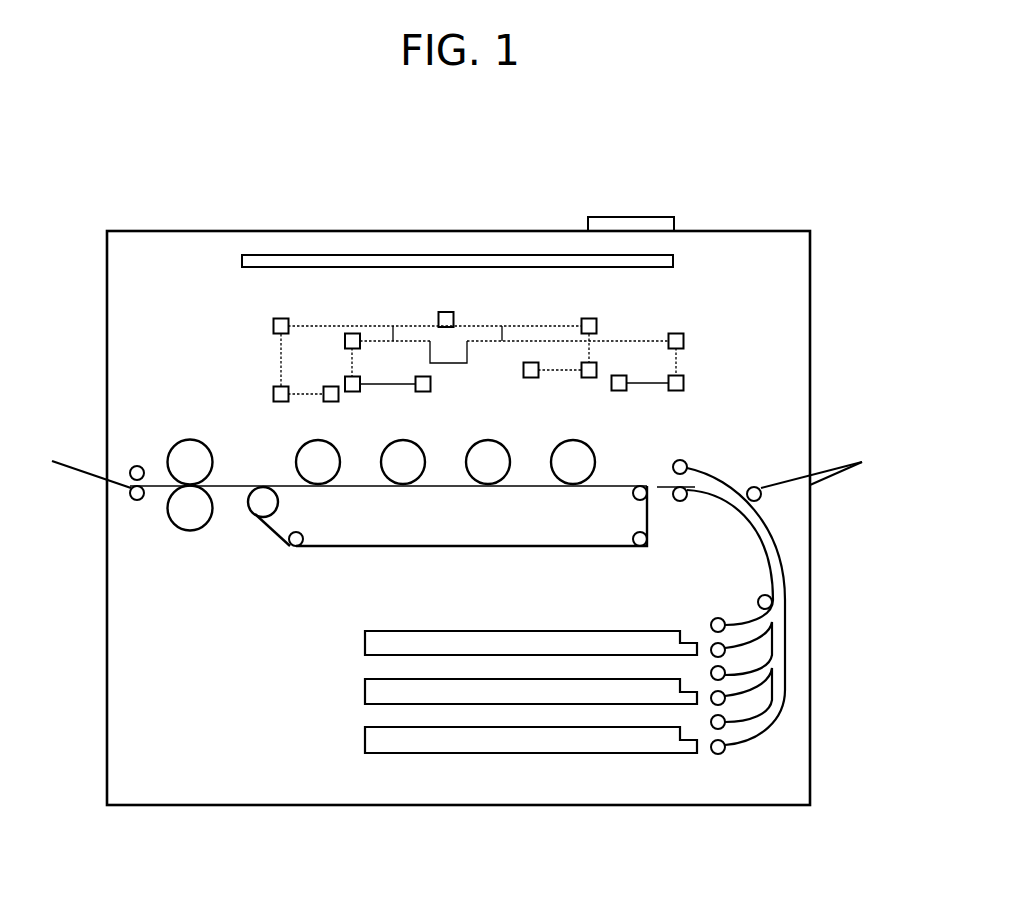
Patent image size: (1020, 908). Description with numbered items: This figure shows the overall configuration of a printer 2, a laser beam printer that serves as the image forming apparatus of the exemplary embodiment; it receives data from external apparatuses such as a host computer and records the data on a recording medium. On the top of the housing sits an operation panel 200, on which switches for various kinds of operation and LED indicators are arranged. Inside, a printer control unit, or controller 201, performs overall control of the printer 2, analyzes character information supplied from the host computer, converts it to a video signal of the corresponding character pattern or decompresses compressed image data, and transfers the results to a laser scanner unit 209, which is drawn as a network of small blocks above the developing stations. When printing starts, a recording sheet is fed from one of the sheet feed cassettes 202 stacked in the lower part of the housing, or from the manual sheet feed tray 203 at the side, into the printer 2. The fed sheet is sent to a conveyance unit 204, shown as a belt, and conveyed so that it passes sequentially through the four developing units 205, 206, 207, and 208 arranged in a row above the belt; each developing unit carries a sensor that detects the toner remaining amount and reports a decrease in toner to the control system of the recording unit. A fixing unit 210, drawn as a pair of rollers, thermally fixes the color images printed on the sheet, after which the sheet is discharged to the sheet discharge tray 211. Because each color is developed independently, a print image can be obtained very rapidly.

The printer 2 is at (442, 807).
The operation panel 200 is at (631, 215).
The printer control unit (controller) 201 is at (440, 253).
The sheet feed cassette 202 is at (363, 646).
The manual sheet feed tray 203 is at (861, 446).
The conveyance unit 204 is at (312, 547).
The developing unit 205 is at (617, 391).
The developing unit 206 is at (529, 378).
The developing unit 207 is at (423, 392).
The developing unit 208 is at (328, 402).
The laser scanner unit 209 is at (433, 320).
The fixing unit 210 is at (189, 531).
The sheet discharge tray 211 is at (82, 478).